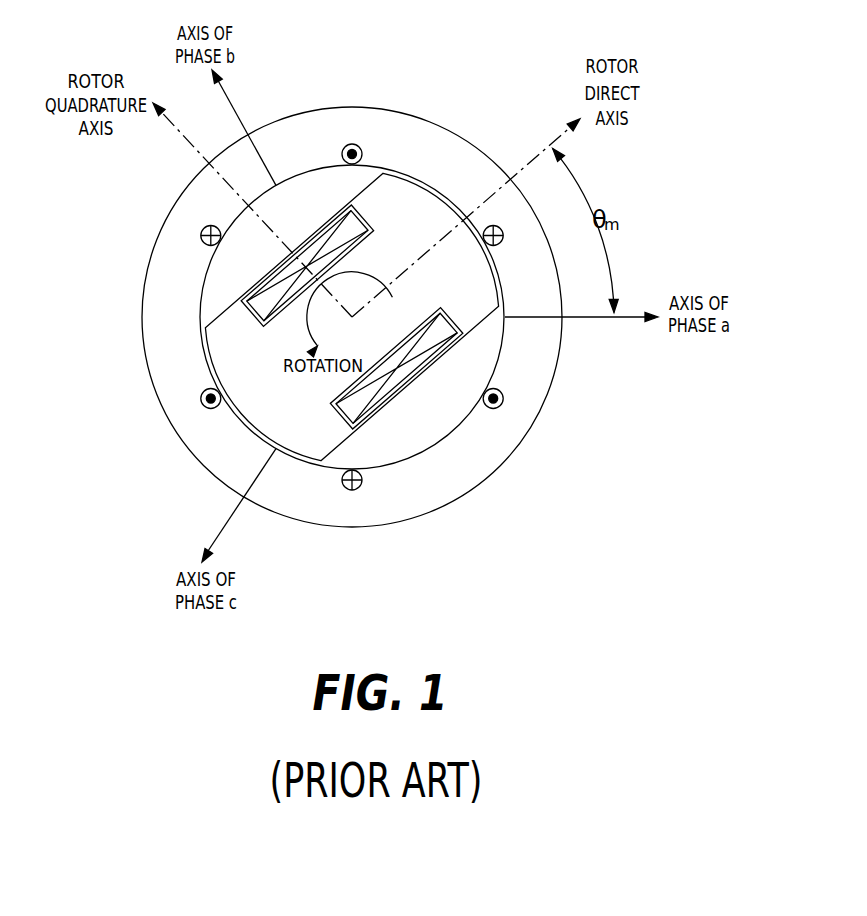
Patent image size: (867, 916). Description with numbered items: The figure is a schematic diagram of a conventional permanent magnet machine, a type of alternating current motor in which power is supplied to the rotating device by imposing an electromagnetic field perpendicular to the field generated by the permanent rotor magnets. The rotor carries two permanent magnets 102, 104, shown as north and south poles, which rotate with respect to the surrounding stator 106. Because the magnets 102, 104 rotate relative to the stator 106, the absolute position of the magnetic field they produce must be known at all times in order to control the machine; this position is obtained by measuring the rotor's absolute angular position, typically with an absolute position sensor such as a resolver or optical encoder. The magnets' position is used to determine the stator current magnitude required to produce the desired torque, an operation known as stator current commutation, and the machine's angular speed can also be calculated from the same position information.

The rotor permanent magnet 102 is at (243, 288).
The rotor permanent magnet 104 is at (452, 363).
The stator 106 is at (490, 418).